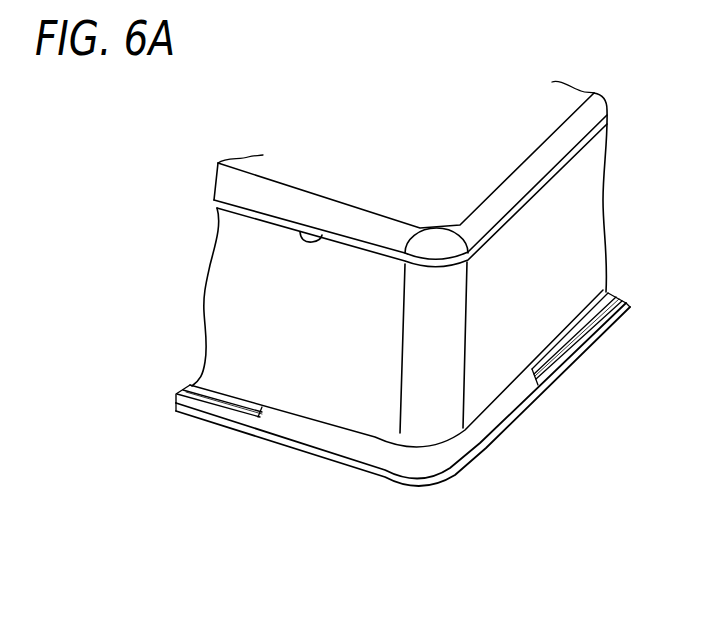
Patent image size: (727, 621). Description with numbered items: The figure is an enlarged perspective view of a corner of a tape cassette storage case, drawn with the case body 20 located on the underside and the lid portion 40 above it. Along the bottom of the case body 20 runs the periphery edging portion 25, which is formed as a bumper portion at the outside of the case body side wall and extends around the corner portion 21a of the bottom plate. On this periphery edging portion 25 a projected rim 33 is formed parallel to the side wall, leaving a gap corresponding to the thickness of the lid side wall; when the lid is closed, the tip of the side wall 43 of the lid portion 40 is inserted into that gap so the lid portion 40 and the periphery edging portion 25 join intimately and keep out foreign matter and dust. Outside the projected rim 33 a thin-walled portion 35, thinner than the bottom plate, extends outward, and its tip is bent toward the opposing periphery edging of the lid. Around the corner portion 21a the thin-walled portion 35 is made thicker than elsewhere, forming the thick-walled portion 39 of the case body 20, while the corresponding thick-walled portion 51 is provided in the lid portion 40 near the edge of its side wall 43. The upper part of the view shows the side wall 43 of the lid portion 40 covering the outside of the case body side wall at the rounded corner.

The case body 20 is at (449, 486).
The corner portion of the bottom plate 21a is at (427, 334).
The periphery edging portion 25 is at (274, 447).
The projected rim 33 is at (192, 386).
The thin-walled portion 35 is at (207, 400).
The thick-walled portion 39 is at (367, 450).
The lid portion 40 is at (440, 169).
The side wall of the lid portion 43 is at (597, 197).
The thick-walled portion 51 is at (300, 232).